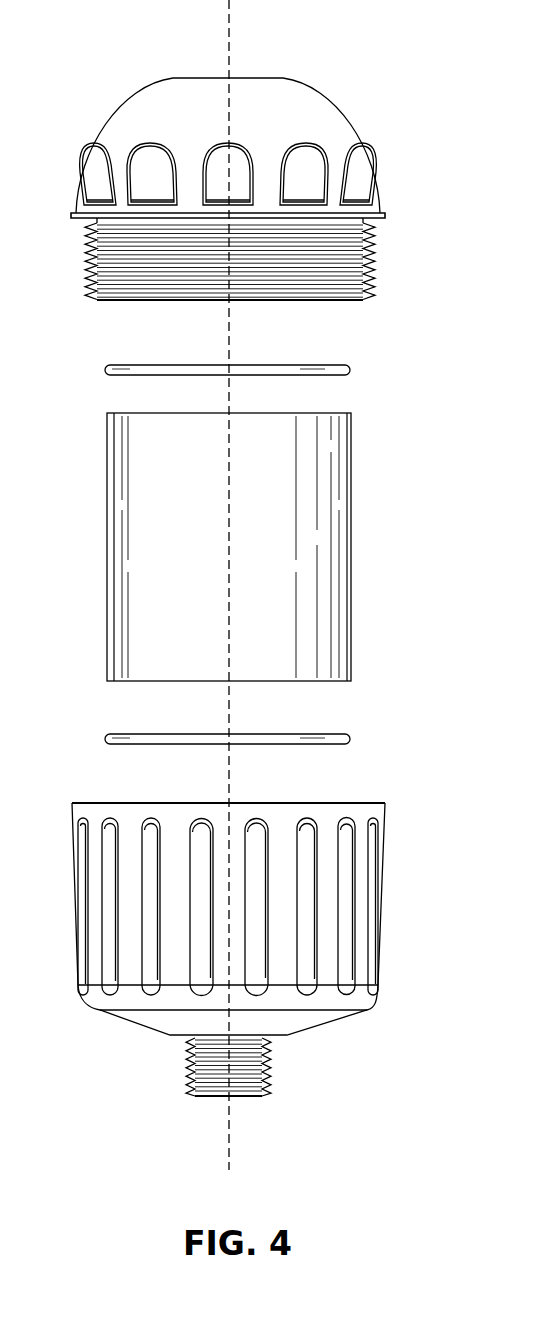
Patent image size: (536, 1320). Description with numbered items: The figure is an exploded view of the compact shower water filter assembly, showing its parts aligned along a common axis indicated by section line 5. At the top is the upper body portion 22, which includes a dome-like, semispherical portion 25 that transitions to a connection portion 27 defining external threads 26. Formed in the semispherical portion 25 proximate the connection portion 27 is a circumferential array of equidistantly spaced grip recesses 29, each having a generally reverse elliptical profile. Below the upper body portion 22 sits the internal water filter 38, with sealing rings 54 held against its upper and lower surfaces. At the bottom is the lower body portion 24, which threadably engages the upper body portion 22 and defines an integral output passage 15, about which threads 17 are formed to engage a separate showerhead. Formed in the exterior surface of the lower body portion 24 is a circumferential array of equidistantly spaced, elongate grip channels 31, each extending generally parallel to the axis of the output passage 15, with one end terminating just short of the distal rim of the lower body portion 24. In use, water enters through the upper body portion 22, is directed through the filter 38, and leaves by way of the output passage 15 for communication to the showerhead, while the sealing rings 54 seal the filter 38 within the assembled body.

The section line 5- 5 is at (232, 14).
The output passage 15 is at (215, 1095).
The threads 17 is at (188, 1050).
The upper body portion 22 is at (383, 160).
The lower body portion 24 is at (385, 873).
The semispherical portion 25 is at (332, 120).
The external threads 26 is at (368, 272).
The connection portion 27 is at (113, 271).
The grip recesses 29 is at (152, 160).
The grip channels 31 is at (152, 937).
The internal water filter 38 is at (351, 496).
The sealing rings 54 is at (350, 370).